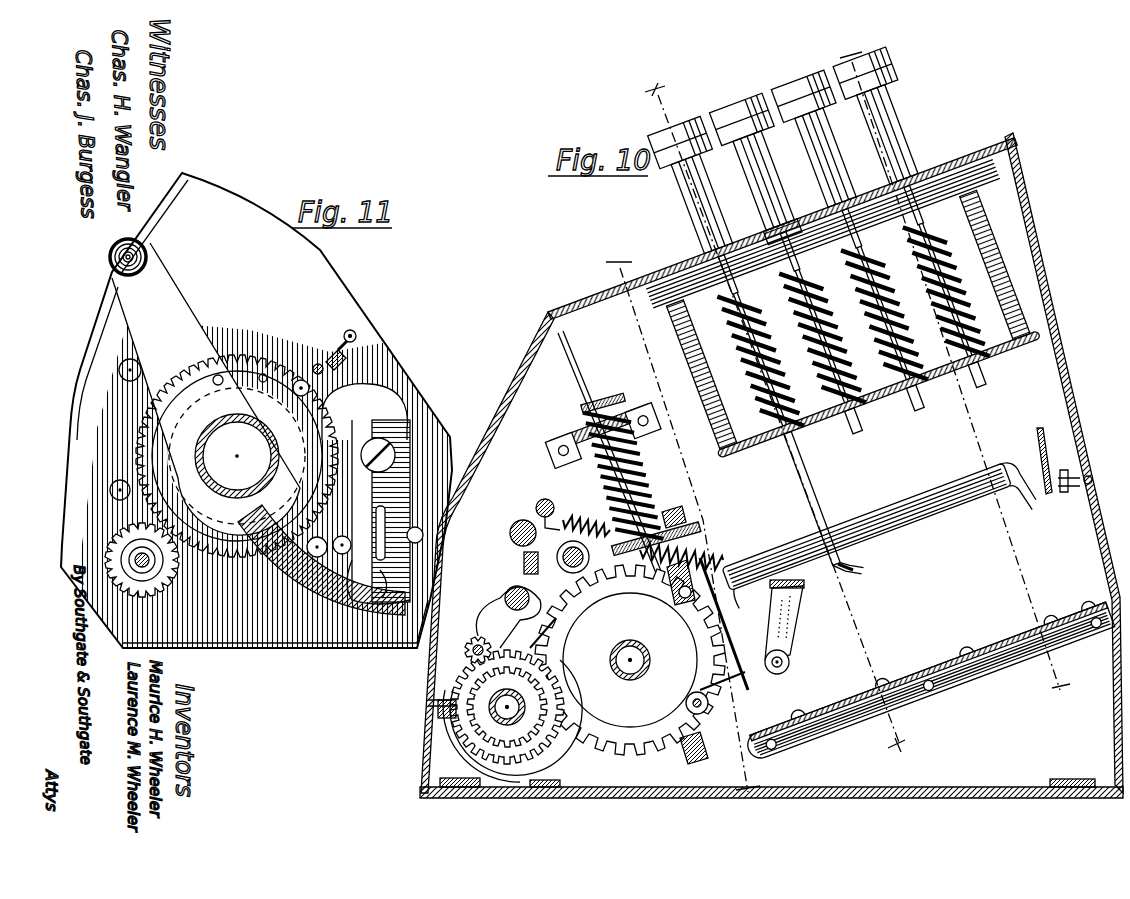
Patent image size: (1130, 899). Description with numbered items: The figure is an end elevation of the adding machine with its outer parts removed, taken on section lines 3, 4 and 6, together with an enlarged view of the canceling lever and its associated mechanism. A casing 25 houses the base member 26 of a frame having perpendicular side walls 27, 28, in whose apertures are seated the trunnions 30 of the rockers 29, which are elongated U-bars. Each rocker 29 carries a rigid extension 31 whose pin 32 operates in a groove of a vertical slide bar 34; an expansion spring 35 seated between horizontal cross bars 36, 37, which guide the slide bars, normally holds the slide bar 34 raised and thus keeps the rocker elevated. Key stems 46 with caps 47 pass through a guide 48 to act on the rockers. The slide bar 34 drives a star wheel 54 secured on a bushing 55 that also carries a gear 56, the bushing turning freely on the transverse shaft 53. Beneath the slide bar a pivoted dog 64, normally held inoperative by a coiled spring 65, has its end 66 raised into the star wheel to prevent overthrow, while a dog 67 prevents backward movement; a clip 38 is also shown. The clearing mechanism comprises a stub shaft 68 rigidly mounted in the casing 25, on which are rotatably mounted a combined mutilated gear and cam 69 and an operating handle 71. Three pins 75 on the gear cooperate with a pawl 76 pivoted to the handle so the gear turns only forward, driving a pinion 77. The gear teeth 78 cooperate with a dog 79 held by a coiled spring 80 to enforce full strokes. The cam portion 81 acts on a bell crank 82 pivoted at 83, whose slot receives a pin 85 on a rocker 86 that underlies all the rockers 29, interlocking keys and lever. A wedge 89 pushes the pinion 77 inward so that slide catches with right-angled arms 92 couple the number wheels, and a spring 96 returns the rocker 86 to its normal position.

In FIG. 10, the section line 3 is at (683, 529).
In FIG. 10, the section line 4 is at (780, 415).
In FIG. 10, the section line 6 is at (955, 368).
In FIG. 10, the casing 25 is at (1066, 368).
In FIG. 10, the base member 26 is at (980, 678).
In FIG. 10, the side wall 27 is at (1088, 533).
In FIG. 10, the side wall 28 is at (768, 688).
In FIG. 10, the rocker 29 is at (925, 515).
In FIG. 10, the trunnion 30 is at (1062, 500).
In FIG. 10, the extension 31 is at (722, 552).
In FIG. 10, the pin 32 is at (690, 612).
In FIG. 10, the slide bar 34 is at (572, 368).
In FIG. 10, the expansion spring 35 is at (640, 455).
In FIG. 10, the cross bar 36 is at (604, 400).
In FIG. 10, the cross bar 37 is at (674, 510).
In FIG. 10, the clip 38 is at (1040, 428).
In FIG. 10, the key stem 46 is at (690, 218).
In FIG. 10, the key cap 47 is at (718, 120).
In FIG. 10, the key guide 48 is at (748, 240).
In FIG. 10, the transverse shaft 53 is at (636, 642).
In FIG. 10, the star wheel 54 is at (552, 658).
In FIG. 10, the bushing 55 is at (616, 650).
In FIG. 10, the gear 56 is at (580, 622).
In FIG. 10, the pivoted dog 64 is at (720, 698).
In FIG. 11, the coiled spring 65 is at (376, 563).
In FIG. 10, the coiled spring 65 is at (684, 752).
In FIG. 10, the end 66 is at (560, 750).
In FIG. 11, the dog 67 is at (300, 598).
In FIG. 11, the stub shaft 68 is at (237, 456).
In FIG. 11, the combined mutilated gear and cam 69 is at (218, 508).
In FIG. 11, the operating handle 71 is at (160, 280).
In FIG. 11, the pin 75 is at (158, 505).
In FIG. 11, the pawl 76 is at (218, 372).
In FIG. 11, the pinion 77 is at (160, 585).
In FIG. 11, the gear teeth 78 is at (263, 372).
In FIG. 11, the dog 79 is at (301, 379).
In FIG. 11, the coiled spring 80 is at (338, 350).
In FIG. 11, the cam portion 81 is at (381, 506).
In FIG. 11, the bell crank 82 is at (365, 412).
In FIG. 11, the pivot 83 is at (374, 535).
In FIG. 11, the pin 85 is at (300, 520).
In FIG. 10, the rocker 86 is at (790, 614).
In FIG. 11, the wedge 89 is at (383, 587).
In FIG. 10, the right-angled arm 92 is at (480, 640).
In FIG. 10, the spring 96 is at (578, 515).